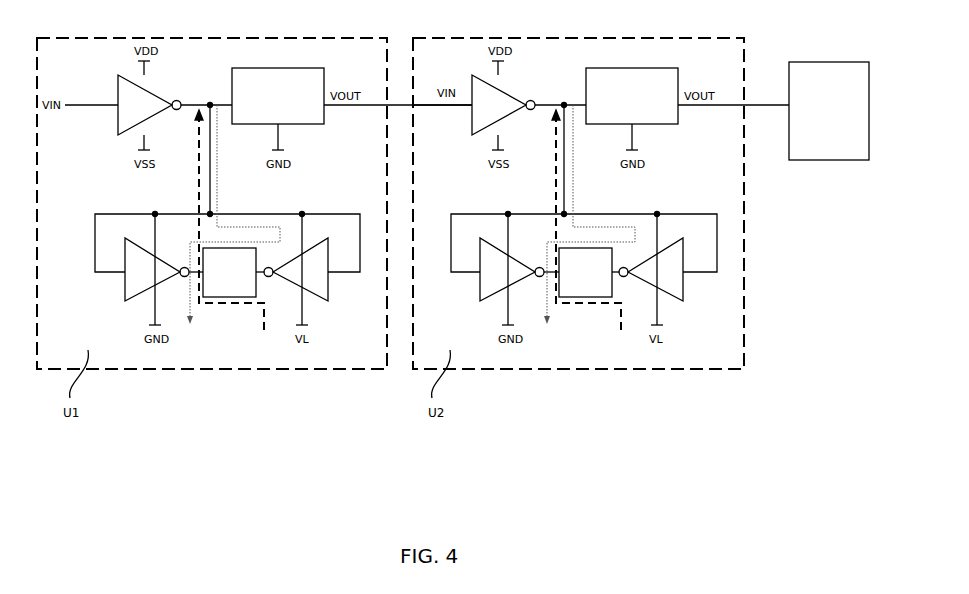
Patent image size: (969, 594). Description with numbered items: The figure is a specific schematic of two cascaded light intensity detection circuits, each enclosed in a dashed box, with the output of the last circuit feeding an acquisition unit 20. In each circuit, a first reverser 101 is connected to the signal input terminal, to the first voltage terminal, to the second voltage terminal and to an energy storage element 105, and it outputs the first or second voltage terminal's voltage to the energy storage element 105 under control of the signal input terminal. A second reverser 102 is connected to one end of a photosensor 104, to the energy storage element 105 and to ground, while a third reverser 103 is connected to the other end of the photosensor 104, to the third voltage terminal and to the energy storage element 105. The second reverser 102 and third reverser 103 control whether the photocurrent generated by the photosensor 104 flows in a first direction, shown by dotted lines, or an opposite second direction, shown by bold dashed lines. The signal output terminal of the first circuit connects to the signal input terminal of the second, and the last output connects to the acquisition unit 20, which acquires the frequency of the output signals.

The acquisition unit 20 is at (818, 78).
The first reverser 101 is at (149, 105).
The second reverser 102 is at (157, 269).
The third reverser 103 is at (296, 269).
The photosensor 104 is at (236, 292).
The energy storage element 105 is at (240, 97).